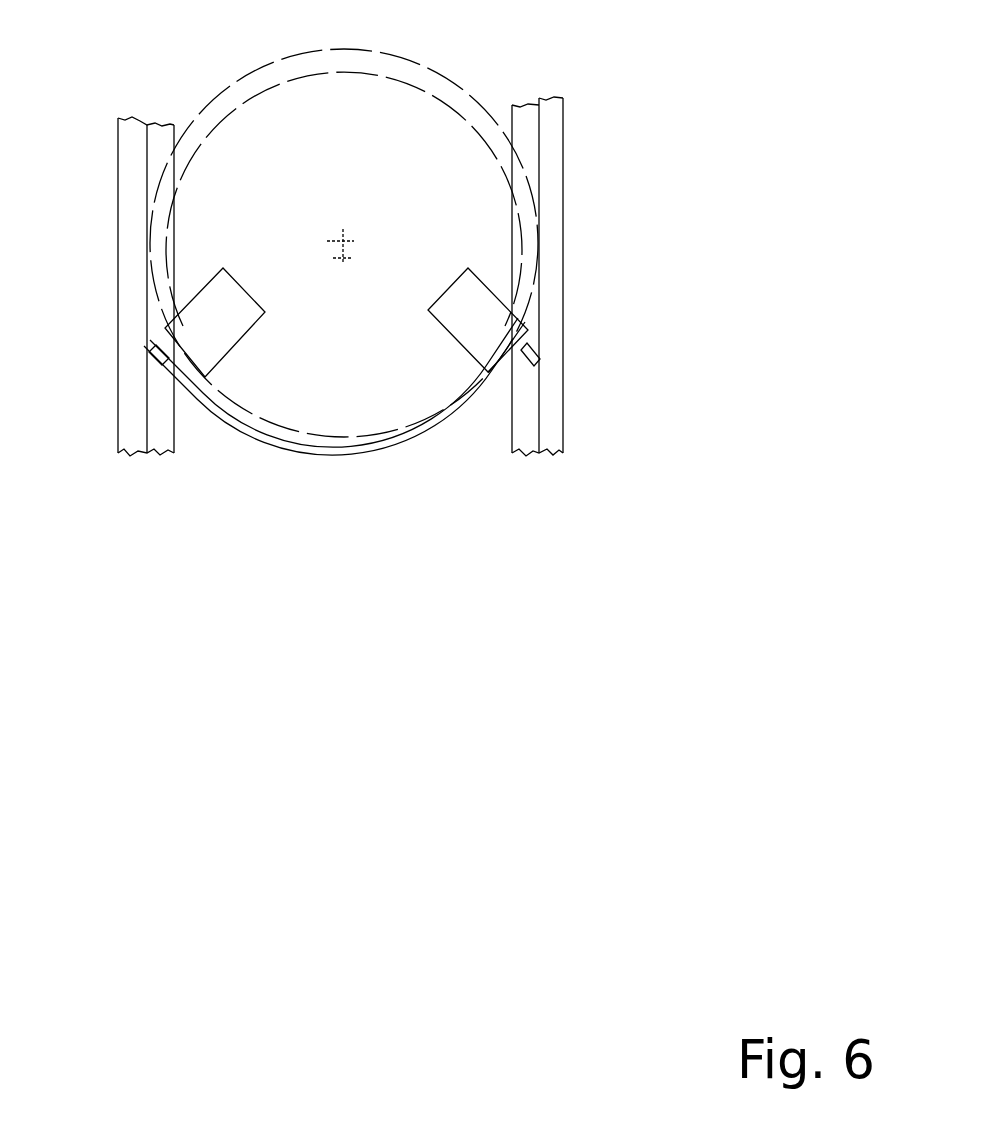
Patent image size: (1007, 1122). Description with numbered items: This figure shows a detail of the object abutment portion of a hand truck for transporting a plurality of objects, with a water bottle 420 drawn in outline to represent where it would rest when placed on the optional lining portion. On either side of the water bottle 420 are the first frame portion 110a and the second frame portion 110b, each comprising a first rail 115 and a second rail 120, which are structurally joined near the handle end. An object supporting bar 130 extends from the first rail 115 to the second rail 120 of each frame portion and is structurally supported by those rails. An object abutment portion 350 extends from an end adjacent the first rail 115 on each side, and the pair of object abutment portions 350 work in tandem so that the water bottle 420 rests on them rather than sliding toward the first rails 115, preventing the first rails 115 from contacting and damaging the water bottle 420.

The water bottle 420 is at (302, 70).
The object abutment portion 350 is at (233, 329).
The object supporting bar 130 is at (153, 348).
The first rail 115 is at (160, 433).
The second rail 120 is at (135, 433).
The first frame portion 110a is at (585, 537).
The second frame portion 110b is at (275, 537).